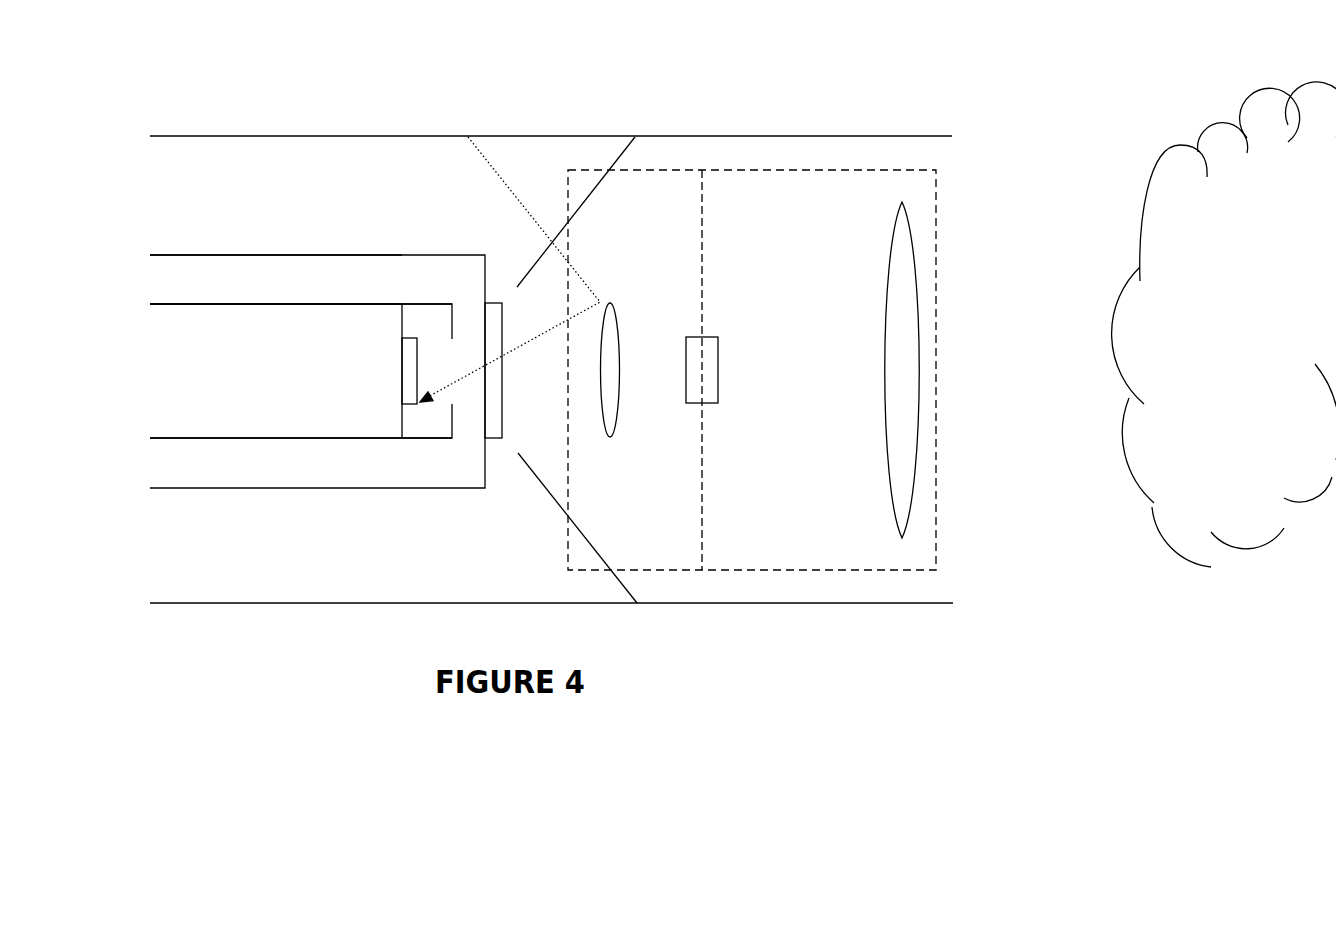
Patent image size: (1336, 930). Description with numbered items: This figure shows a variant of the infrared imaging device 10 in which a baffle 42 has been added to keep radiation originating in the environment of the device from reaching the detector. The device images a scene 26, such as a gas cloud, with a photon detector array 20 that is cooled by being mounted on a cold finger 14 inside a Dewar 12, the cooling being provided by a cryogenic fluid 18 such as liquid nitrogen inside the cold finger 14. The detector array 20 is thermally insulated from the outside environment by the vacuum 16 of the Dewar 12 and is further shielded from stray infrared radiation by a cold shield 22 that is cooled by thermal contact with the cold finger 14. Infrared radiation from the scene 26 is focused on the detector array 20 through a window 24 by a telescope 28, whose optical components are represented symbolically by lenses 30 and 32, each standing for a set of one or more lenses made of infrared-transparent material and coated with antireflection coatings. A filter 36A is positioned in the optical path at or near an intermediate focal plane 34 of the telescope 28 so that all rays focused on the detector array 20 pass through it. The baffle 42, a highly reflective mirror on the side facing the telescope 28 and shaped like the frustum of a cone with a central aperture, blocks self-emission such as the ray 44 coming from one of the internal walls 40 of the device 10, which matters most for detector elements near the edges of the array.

The device 10 is at (872, 100).
The Dewar 12 is at (299, 254).
The cold finger 14 is at (368, 303).
The vacuum 16 is at (213, 287).
The cryogenic fluid 18 is at (181, 369).
The photon detector array 20 is at (403, 389).
The cold shield 22 is at (418, 438).
The window 24 is at (502, 433).
The scene 26 is at (1215, 314).
The telescope 28 is at (787, 571).
The lens 30 is at (902, 285).
The lens 32 is at (617, 403).
The intermediate focal plane 34 is at (702, 218).
The filter 36A is at (718, 370).
The internal walls 40 is at (300, 136).
The baffle 42 is at (583, 203).
The ray 44 is at (502, 187).